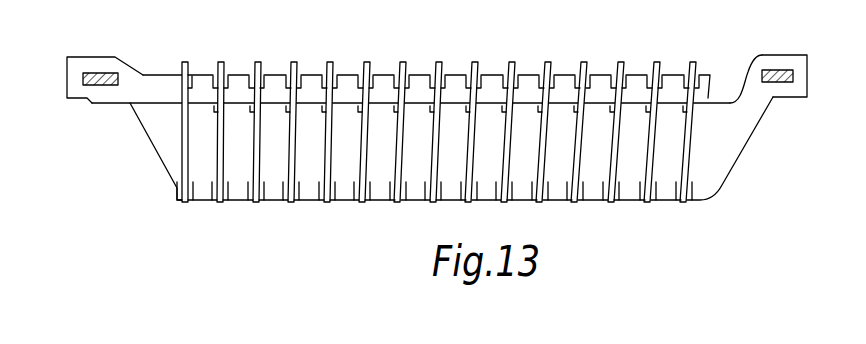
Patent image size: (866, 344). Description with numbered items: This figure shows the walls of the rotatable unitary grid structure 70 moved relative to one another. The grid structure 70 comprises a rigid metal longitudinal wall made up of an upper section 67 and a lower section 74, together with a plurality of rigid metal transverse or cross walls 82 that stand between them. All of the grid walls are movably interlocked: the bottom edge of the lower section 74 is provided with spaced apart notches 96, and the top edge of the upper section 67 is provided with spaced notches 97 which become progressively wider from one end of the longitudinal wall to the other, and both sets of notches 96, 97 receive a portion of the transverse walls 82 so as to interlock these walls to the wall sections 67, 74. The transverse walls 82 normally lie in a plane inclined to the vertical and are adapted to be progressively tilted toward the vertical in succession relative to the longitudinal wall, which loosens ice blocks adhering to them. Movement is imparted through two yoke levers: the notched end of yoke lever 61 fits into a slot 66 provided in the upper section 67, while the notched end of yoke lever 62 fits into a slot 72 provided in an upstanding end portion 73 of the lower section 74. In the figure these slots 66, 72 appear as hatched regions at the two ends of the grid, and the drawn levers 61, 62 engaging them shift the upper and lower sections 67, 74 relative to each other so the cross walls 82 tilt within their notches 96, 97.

The yoke lever 61 is at (92, 72).
The yoke lever 62 is at (772, 72).
The slot 66 is at (112, 72).
The upper section 67 is at (203, 80).
The unitary grid structure 70 is at (162, 152).
The slot 72 is at (795, 77).
The upstanding end portion 73 is at (753, 68).
The lower section 74 is at (730, 152).
The transverse walls 82 is at (580, 64).
The notches 96 is at (577, 202).
The notches 97 is at (643, 80).